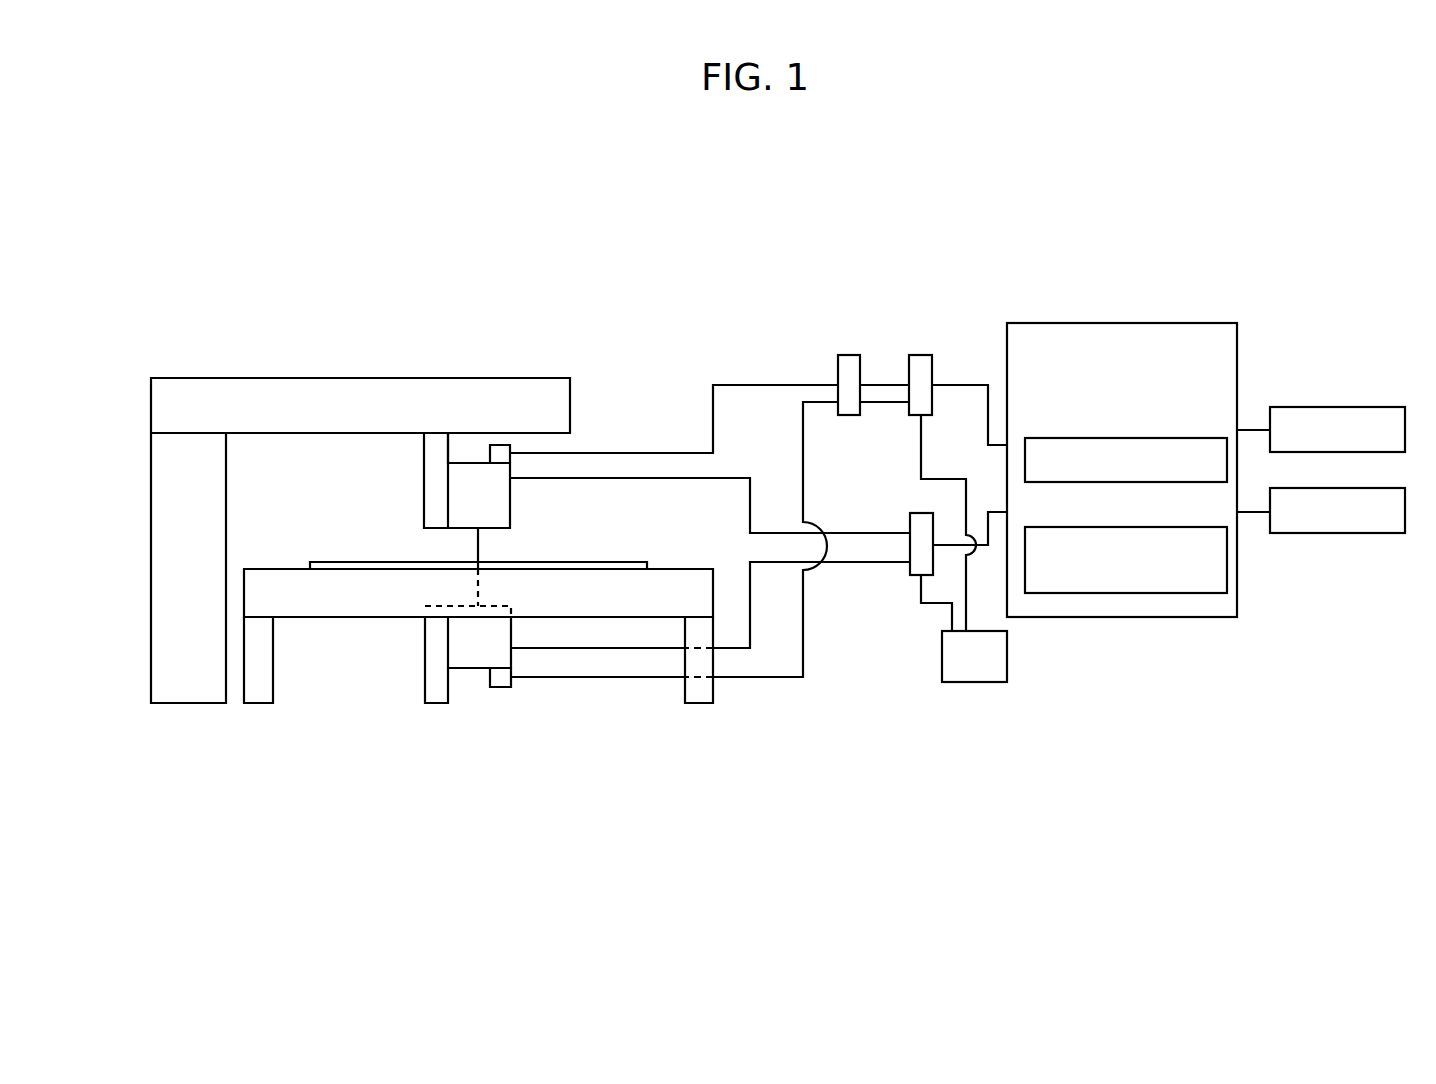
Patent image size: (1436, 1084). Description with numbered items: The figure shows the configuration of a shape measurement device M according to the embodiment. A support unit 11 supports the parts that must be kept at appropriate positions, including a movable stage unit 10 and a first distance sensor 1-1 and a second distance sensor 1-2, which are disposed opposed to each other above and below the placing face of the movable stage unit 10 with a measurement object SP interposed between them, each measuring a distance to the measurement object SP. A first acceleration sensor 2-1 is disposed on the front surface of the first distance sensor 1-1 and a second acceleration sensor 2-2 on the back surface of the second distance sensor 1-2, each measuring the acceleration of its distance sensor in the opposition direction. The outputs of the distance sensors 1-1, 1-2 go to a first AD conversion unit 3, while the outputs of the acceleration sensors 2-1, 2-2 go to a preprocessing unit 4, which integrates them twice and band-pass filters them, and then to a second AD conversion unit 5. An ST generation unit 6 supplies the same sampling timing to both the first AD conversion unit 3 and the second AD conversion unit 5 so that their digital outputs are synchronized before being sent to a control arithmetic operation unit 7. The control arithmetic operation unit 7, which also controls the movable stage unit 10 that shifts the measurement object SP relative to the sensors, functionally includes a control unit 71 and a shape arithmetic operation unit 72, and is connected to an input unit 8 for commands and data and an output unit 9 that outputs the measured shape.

The shape measurement device M is at (370, 212).
The support unit 11 is at (218, 388).
The first distance sensor 1-1 is at (470, 463).
The first acceleration sensor 2-1 is at (500, 445).
The second distance sensor 1-2 is at (473, 668).
The second acceleration sensor 2-2 is at (500, 687).
The movable stage unit 10 is at (610, 617).
The measurement object SP is at (610, 562).
The first AD conversion unit 3 is at (922, 513).
The preprocessing unit 4 is at (848, 355).
The second AD conversion unit 5 is at (920, 355).
The ST generation unit 6 is at (965, 682).
The control arithmetic operation unit 7 is at (1127, 323).
The control unit 71 is at (1142, 438).
The shape arithmetic operation unit 72 is at (1142, 527).
The input unit 8 is at (1345, 407).
The output unit 9 is at (1342, 533).